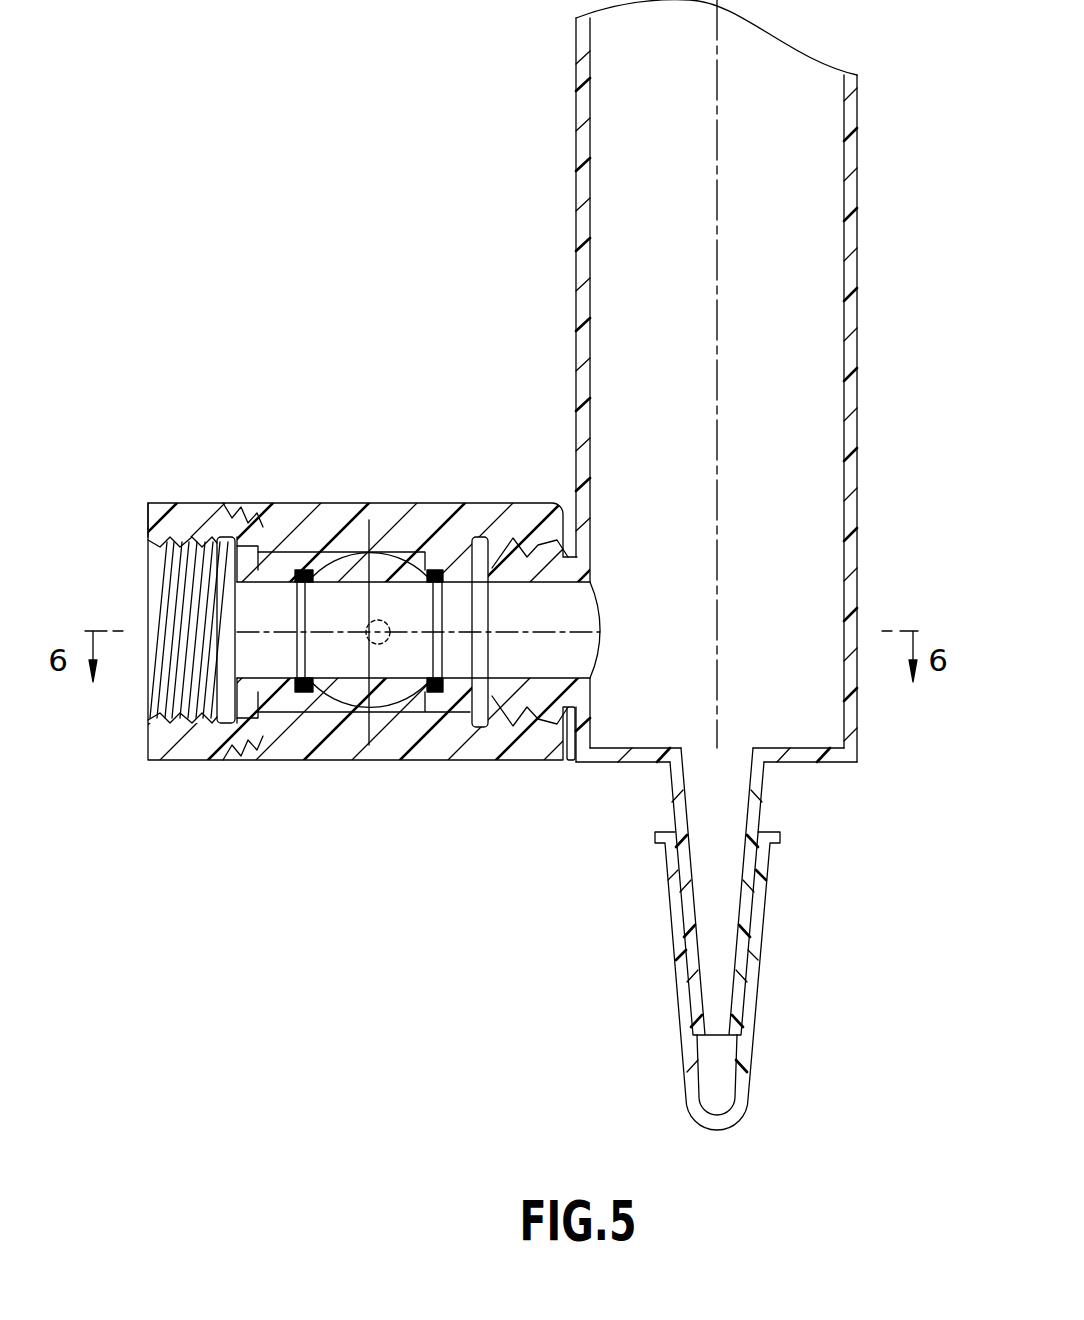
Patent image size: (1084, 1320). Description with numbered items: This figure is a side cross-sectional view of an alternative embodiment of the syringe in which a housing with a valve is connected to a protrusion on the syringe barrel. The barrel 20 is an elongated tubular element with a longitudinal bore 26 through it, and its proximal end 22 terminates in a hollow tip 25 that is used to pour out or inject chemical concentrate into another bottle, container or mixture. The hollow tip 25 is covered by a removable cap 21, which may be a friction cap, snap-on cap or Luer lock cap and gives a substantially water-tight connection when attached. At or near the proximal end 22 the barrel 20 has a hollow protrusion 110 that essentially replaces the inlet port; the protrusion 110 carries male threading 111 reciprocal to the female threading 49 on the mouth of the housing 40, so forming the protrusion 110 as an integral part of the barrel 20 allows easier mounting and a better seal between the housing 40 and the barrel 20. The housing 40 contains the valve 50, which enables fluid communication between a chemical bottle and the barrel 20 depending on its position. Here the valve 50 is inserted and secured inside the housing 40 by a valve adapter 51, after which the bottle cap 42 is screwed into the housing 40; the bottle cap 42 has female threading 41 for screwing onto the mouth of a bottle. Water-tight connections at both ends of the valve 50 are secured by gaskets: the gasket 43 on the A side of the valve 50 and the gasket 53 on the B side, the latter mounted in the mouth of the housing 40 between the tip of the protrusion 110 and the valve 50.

The barrel 20 is at (858, 186).
The removable cap 21 is at (738, 1077).
The proximal end 22 is at (858, 722).
The hollow tip 25 is at (763, 787).
The longitudinal bore 26 is at (833, 388).
The housing 40 is at (275, 510).
The female threading 41 is at (155, 688).
The bottle cap 42 is at (167, 508).
The gasket 43 is at (223, 590).
The female threading 49 is at (520, 720).
The valve 50 is at (338, 668).
The valve adapter 51 is at (337, 712).
The gasket 53 is at (483, 543).
The hollow protrusion 110 is at (557, 560).
The male threading 111 is at (555, 723).